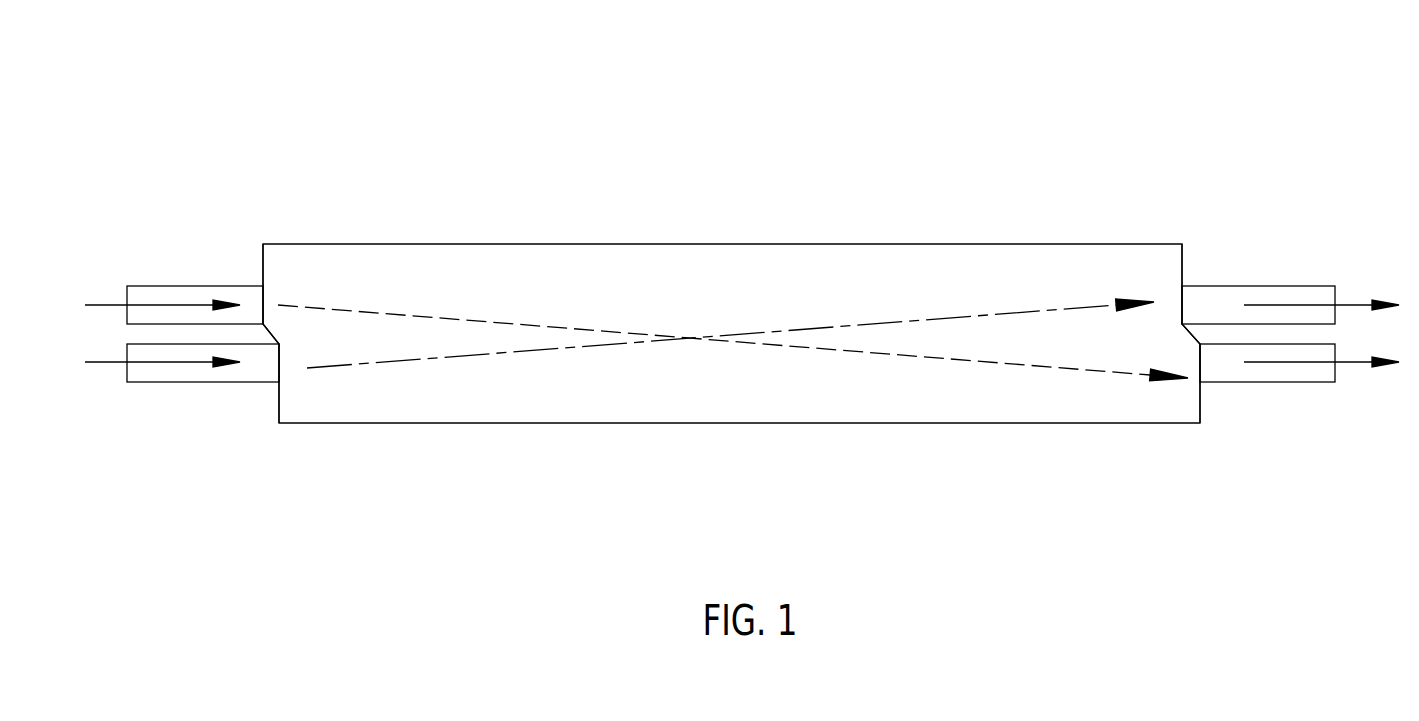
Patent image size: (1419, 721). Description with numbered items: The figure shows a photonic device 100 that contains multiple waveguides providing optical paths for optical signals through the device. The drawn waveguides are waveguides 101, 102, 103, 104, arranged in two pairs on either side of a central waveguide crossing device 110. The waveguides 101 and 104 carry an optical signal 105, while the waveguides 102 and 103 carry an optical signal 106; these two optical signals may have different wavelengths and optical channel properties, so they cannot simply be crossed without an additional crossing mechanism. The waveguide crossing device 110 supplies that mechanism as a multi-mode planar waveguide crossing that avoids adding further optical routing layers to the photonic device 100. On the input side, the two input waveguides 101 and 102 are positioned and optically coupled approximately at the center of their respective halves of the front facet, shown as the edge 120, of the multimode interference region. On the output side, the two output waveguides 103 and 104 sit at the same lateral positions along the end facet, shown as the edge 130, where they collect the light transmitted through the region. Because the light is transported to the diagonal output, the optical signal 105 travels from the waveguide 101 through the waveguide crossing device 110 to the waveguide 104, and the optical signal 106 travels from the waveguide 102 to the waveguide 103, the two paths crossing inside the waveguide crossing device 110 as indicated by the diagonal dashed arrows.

The photonic device 100 is at (1275, 44).
The waveguide crossing device 110 is at (904, 244).
The edge 120 is at (264, 244).
The edge 130 is at (1182, 244).
The waveguide 101 is at (232, 286).
The waveguide 102 is at (235, 382).
The waveguide 103 is at (1270, 286).
The waveguide 104 is at (1278, 382).
The optical signal 105 is at (108, 305).
The optical signal 106 is at (112, 362).